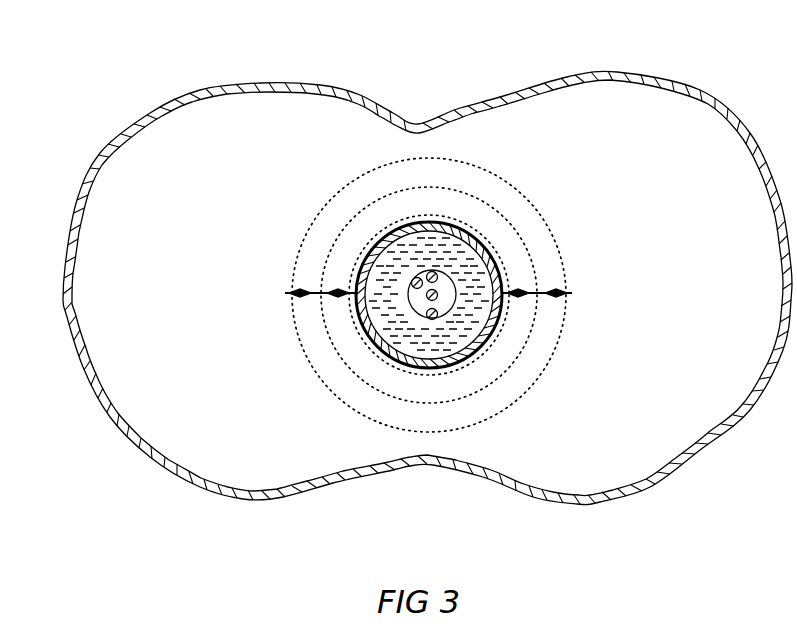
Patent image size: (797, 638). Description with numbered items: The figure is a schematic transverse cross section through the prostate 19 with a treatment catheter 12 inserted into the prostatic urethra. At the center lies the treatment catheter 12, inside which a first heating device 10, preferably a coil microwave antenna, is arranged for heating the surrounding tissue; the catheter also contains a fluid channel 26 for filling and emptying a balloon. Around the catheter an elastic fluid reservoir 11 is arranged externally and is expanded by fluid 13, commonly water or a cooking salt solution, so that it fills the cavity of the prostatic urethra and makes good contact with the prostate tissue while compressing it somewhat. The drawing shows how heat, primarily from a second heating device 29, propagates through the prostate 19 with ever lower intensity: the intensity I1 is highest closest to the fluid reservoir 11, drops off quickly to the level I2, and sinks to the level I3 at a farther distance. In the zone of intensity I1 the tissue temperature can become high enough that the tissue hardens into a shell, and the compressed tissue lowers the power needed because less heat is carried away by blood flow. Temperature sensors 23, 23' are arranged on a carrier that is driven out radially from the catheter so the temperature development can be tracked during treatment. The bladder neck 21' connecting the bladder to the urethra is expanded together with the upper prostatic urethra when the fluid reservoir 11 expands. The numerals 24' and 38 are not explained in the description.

The first heating device 10 is at (430, 298).
The fluid reservoir 11 is at (370, 333).
The treatment catheter 12 is at (443, 262).
The fluid 13 is at (428, 350).
The prostate 19 is at (90, 390).
The bladder neck 21' is at (337, 205).
The temperature sensor 23 is at (636, 401).
The temperature sensor 23' is at (599, 413).
The field direction arrow 24' is at (219, 391).
The fluid channel 26 is at (413, 277).
The second heating device 29 is at (440, 321).
The channel opening 38 is at (428, 268).
The intensity level I1 is at (508, 277).
The intensity level I2 is at (515, 235).
The intensity level I3 is at (523, 195).